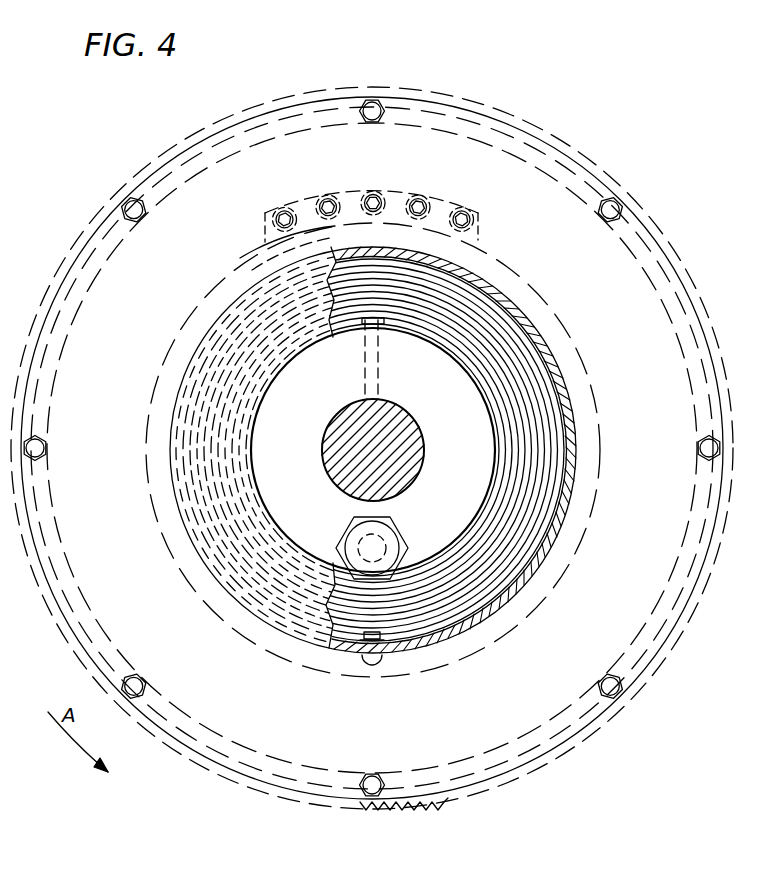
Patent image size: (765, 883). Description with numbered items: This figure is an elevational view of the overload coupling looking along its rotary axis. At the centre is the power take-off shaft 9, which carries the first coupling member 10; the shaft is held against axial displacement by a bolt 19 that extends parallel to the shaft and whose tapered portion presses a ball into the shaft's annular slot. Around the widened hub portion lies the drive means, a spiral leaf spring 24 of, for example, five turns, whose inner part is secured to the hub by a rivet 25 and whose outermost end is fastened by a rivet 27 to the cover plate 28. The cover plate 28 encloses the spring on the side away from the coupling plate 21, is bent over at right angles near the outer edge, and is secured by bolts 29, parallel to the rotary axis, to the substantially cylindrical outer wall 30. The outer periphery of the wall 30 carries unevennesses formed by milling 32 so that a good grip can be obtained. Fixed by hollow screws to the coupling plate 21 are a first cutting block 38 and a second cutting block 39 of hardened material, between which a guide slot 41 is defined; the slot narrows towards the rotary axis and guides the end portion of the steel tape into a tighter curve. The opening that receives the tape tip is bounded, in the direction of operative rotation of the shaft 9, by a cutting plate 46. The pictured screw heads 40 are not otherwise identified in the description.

The power take-off shaft 9 is at (322, 445).
The first coupling member 10 is at (300, 497).
The bolt 19 is at (385, 538).
The coupling plate 21 is at (530, 728).
The spiral leaf spring 24 is at (497, 450).
The rivet 25 is at (374, 353).
The rivet 27 is at (372, 665).
The cover plate 28 is at (218, 714).
The bolts 29 is at (623, 205).
The outer wall 30 is at (262, 770).
The milling 32 is at (446, 801).
The first cutting block 38 is at (475, 232).
The second cutting block 39 is at (266, 213).
The screws 40 is at (428, 208).
The guide slot 41 is at (360, 200).
The cutting plate 46 is at (276, 243).